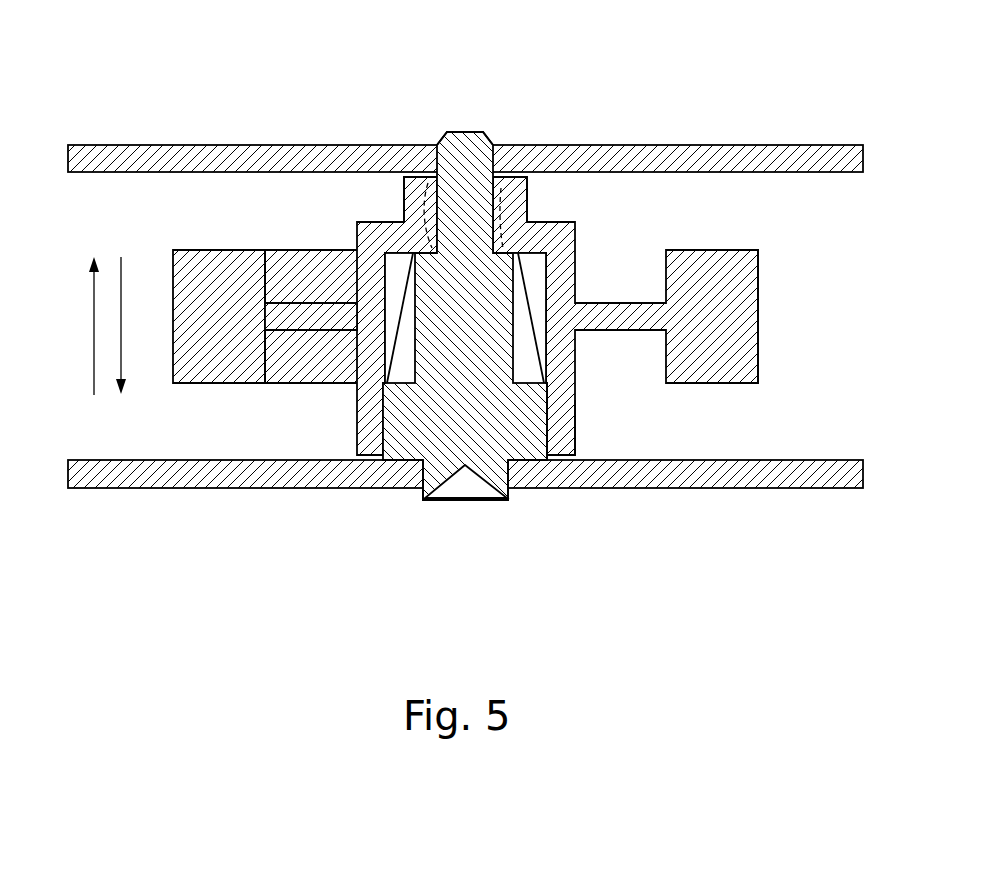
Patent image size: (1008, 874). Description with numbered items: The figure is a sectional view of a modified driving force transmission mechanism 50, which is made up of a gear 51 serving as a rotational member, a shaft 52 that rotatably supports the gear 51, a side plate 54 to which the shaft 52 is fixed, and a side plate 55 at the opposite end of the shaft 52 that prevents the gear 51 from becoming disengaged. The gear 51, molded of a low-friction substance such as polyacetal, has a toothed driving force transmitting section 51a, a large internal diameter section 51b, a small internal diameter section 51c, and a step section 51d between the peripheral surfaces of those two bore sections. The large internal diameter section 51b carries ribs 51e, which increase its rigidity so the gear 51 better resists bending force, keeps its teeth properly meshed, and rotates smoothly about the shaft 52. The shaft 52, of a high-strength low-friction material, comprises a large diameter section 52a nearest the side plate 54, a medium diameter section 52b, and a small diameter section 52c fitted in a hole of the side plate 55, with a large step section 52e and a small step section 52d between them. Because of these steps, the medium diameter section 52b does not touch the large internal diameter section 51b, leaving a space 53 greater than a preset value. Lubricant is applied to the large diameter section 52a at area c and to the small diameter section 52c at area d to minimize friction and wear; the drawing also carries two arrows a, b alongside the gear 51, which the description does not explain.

The driving force transmission mechanism 50 is at (635, 107).
The gear 51 is at (760, 270).
The driving force transmitting section 51a is at (745, 322).
The large internal diameter section 51b is at (560, 440).
The small internal diameter section 51c is at (520, 177).
The step section 51d is at (503, 240).
The ribs 51e is at (396, 270).
The shaft 52 is at (450, 131).
The large diameter section 52a is at (461, 435).
The medium diameter section 52b is at (433, 335).
The small diameter section 52c is at (473, 143).
The small step section 52d is at (528, 268).
The large step section 52e is at (548, 408).
The space 53 is at (525, 360).
The side plate 54 is at (220, 488).
The side plate 55 is at (190, 152).
The direction a is at (128, 325).
The direction b is at (84, 326).
The area c is at (385, 458).
The area d is at (432, 190).